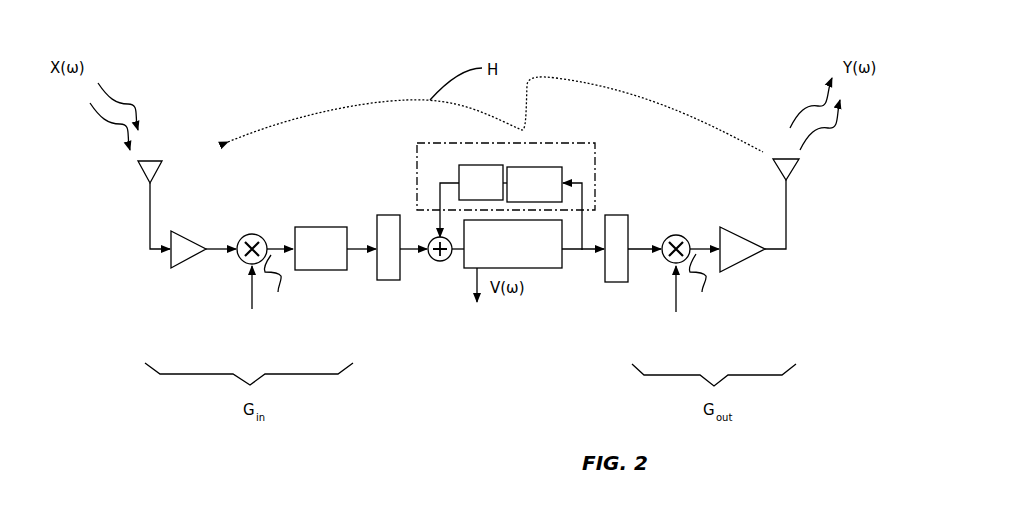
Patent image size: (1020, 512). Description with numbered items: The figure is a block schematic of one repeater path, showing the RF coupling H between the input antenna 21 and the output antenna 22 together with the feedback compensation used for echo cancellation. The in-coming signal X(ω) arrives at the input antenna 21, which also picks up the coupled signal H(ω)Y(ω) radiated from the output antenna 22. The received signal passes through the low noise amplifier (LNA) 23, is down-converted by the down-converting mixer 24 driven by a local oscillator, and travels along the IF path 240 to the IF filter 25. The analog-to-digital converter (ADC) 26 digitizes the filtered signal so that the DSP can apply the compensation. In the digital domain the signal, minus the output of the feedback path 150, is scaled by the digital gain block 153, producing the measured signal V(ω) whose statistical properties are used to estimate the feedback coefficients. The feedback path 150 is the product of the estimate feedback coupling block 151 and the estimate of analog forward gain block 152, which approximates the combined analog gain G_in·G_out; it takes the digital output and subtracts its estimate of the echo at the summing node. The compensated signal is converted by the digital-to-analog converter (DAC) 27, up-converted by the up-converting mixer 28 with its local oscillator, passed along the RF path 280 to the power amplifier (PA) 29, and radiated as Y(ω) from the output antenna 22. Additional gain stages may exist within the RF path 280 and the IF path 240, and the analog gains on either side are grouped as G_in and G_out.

The input antenna 21 is at (138, 165).
The output antenna 22 is at (792, 174).
The low noise amplifier (LNA) 23 is at (188, 236).
The down-converting mixer 24 is at (248, 236).
The IF filter 25 is at (320, 226).
The analog-to-digital converter (ADC) 26 is at (390, 282).
The digital-to-analog converter (DAC) 27 is at (618, 283).
The up-converting mixer 28 is at (683, 237).
The power amplifier (PA) 29 is at (738, 263).
The feedback path 150 is at (417, 172).
The estimate feedback coupling block 151 is at (484, 165).
The estimate of analog forward gain block 152 is at (540, 167).
The digital gain block 153 is at (537, 270).
The IF path 240 is at (280, 284).
The RF path 280 is at (703, 284).